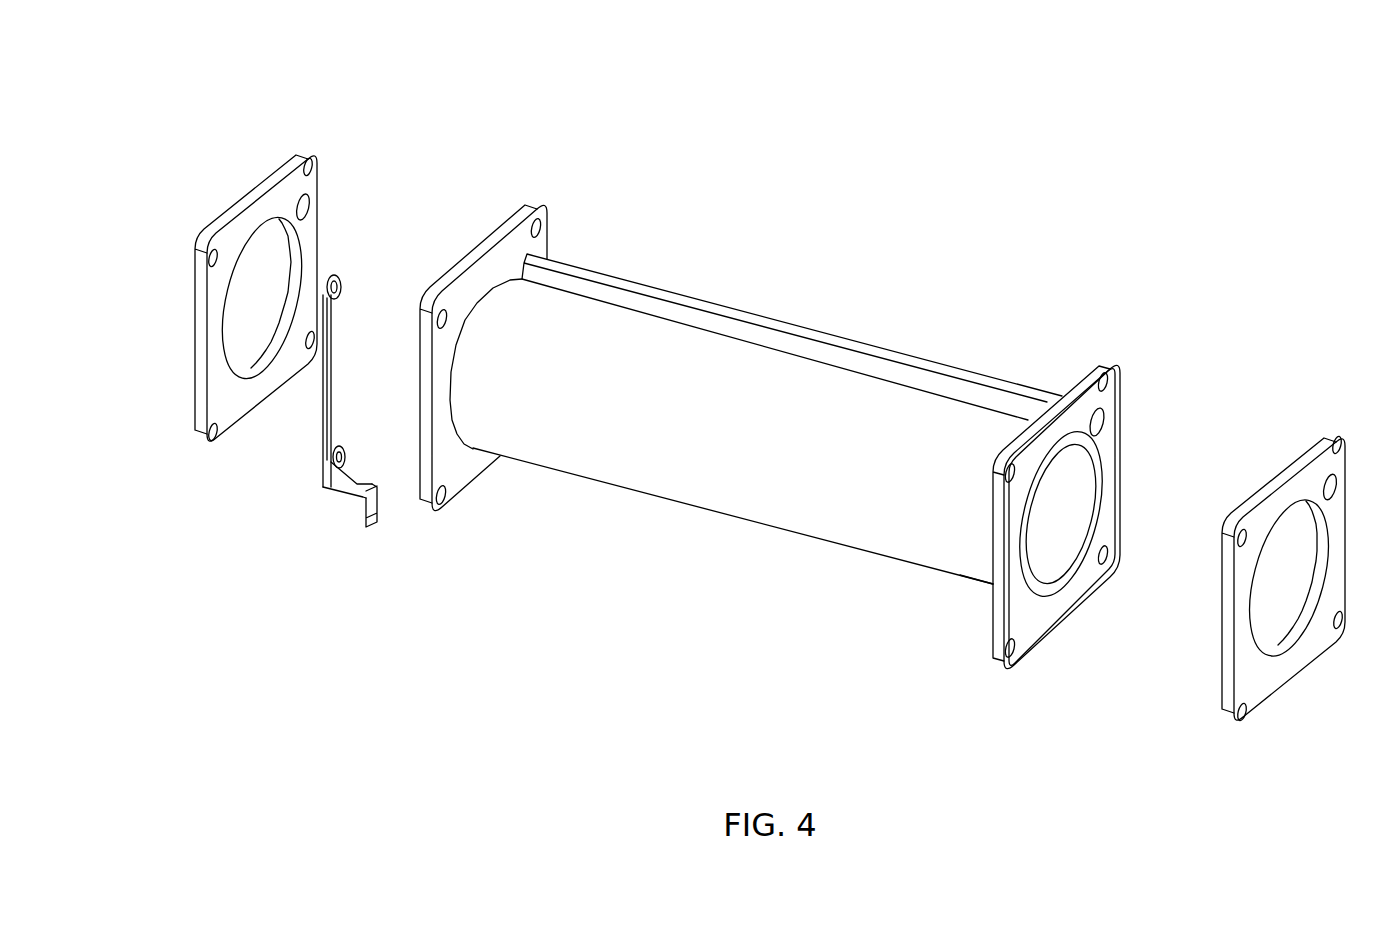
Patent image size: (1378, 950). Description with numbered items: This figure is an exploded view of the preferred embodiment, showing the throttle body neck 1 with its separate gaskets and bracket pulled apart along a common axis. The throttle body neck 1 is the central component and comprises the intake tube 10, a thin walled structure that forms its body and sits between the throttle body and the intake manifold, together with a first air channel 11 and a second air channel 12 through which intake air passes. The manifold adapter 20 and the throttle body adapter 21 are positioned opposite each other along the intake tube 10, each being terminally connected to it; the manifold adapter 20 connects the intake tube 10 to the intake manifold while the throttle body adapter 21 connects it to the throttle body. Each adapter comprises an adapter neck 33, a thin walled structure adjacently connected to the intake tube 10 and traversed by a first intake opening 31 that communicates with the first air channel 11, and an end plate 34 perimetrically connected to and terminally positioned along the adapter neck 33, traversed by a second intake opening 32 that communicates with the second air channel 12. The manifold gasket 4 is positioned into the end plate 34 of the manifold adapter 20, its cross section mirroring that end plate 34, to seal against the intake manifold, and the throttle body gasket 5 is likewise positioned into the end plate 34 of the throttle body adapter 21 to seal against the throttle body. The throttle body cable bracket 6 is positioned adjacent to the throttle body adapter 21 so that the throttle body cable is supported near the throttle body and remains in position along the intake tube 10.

The throttle body neck 1 is at (770, 402).
The manifold gasket 4 is at (1265, 692).
The throttle body gasket 5 is at (300, 157).
The throttle body cable bracket 6 is at (337, 487).
The intake tube 10 is at (756, 457).
The first air channel 11 is at (1066, 562).
The second air channel 12 is at (1106, 428).
The manifold adapter 20 is at (1101, 409).
The throttle body adapter 21 is at (802, 350).
The first intake opening 31 is at (1065, 580).
The second intake opening 32 is at (1097, 437).
The adapter neck 33 is at (477, 443).
The end plate 34 is at (545, 204).